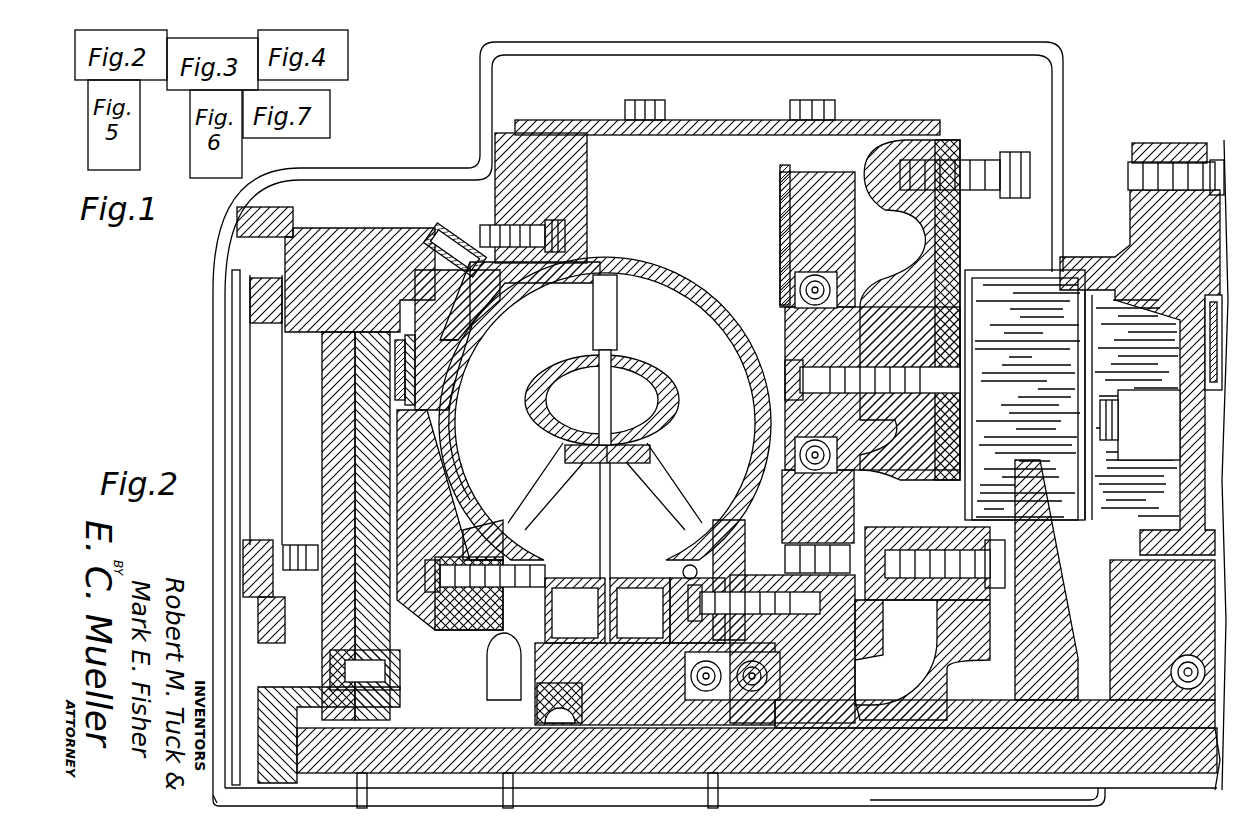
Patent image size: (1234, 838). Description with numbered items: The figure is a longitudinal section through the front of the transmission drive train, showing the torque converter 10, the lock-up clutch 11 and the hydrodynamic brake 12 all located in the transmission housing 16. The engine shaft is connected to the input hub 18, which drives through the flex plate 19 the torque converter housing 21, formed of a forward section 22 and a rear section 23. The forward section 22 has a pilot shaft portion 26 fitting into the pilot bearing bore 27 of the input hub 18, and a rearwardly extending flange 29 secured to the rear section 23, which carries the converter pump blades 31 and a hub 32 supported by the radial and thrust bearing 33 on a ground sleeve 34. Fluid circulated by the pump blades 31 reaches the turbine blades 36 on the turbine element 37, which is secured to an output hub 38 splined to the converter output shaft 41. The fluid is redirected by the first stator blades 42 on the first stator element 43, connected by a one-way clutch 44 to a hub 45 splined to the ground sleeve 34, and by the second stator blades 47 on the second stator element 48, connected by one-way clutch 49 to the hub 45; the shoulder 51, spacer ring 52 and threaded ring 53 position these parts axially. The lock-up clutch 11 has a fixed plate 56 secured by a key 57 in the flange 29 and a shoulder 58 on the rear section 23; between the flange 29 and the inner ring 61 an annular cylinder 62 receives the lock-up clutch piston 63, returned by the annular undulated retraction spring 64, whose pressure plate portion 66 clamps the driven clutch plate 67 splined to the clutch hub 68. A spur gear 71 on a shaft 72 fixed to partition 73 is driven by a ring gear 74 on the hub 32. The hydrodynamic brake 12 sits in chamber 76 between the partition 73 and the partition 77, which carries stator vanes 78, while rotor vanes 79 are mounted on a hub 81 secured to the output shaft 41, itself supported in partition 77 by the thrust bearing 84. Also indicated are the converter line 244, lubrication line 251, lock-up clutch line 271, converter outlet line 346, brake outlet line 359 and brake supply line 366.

The torque converter 10 is at (665, 285).
The lock-up clutch 11 is at (450, 358).
The hydrodynamic brake 12 is at (1144, 465).
The transmission housing 16 is at (950, 140).
The input hub 18 is at (270, 625).
The flex plate 19 is at (236, 450).
The torque converter housing 21 is at (315, 240).
The forward section 22 is at (350, 440).
The rear section 23 is at (712, 310).
The pilot shaft portion 26 is at (300, 690).
The pilot bearing bore 27 is at (268, 690).
The rearwardly extending flange 29 is at (392, 250).
The converter pump blades 31 is at (640, 300).
The hub 32 is at (730, 520).
The radial and thrust bearing 33 is at (765, 676).
The ground sleeve 34 is at (830, 735).
The turbine blades 36 is at (530, 388).
The turbine element 37 is at (452, 425).
The output hub 38 is at (470, 590).
The converter output shaft 41 is at (605, 760).
The first stator blades 42 is at (588, 455).
The first stator element 43 is at (560, 480).
The one-way clutch 44 is at (548, 635).
The hub 45 is at (585, 665).
The second stator blades 47 is at (624, 455).
The second stator element 48 is at (652, 480).
The one-way clutch 49 is at (672, 615).
The shoulder 51 is at (805, 688).
The spacer ring 52 is at (660, 640).
The ring 53 is at (565, 720).
The fixed plate 56 is at (450, 345).
The key 57 is at (460, 240).
The shoulder 58 is at (495, 290).
The inner ring 61 is at (428, 612).
The annular cylinder 62 is at (355, 548).
The lock-up clutch piston 63 is at (360, 505).
The annular undulated retraction spring 64 is at (422, 245).
The pressure plate portion 66 is at (400, 368).
The driven clutch plate 67 is at (420, 375).
The clutch hub 68 is at (460, 492).
The spur gear 71 is at (855, 505).
The shaft 72 is at (800, 330).
The partition 73 is at (935, 265).
The ring gear 74 is at (775, 590).
The chamber 76 is at (1000, 275).
The partition 77 is at (1200, 320).
The radial vanes 78 is at (1105, 290).
The radial vanes 79 is at (1040, 290).
The hub 81 is at (1040, 620).
The thrust bearing 84 is at (1150, 650).
The converter line 244 is at (718, 798).
The lubrication line 251 is at (1150, 775).
The lock-up clutch line 271 is at (355, 798).
The outlet line 346 is at (505, 798).
The brake outlet line 359 is at (217, 800).
The line 366 is at (875, 806).